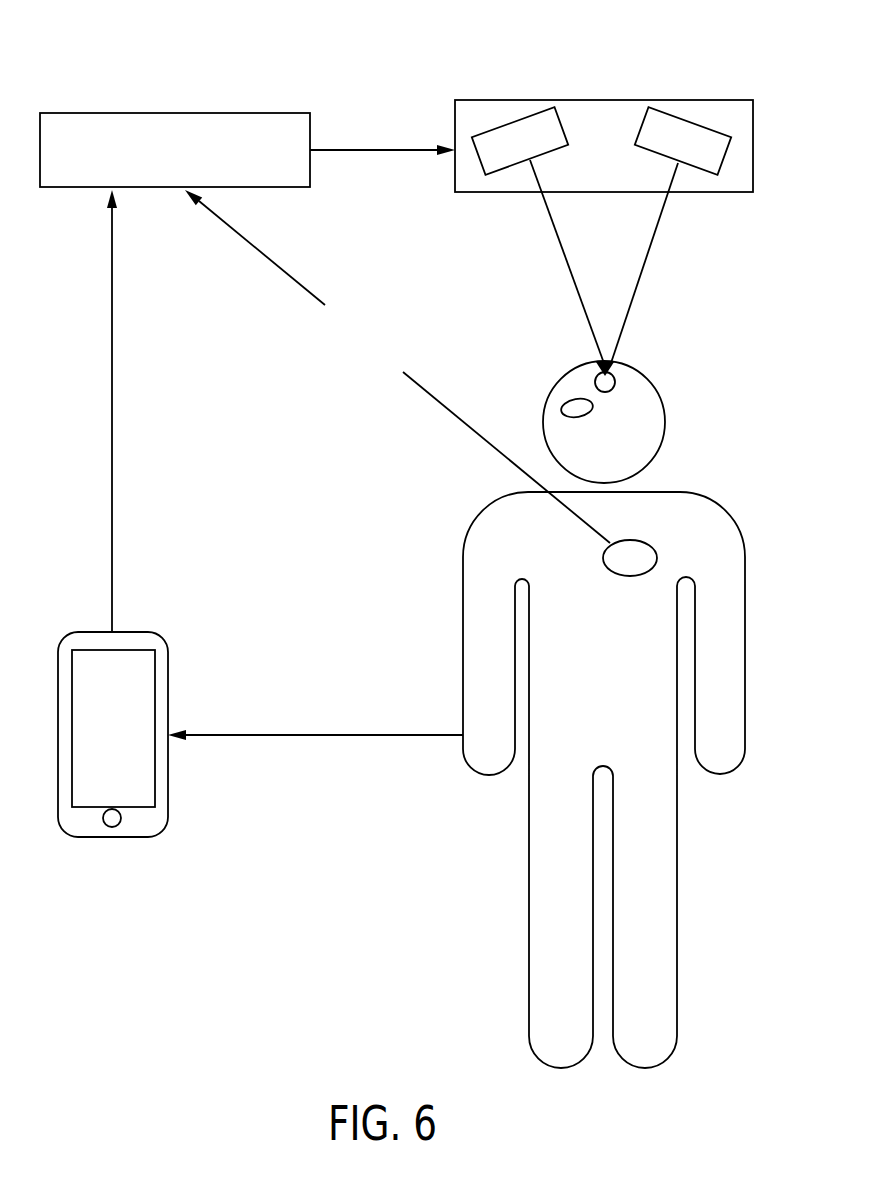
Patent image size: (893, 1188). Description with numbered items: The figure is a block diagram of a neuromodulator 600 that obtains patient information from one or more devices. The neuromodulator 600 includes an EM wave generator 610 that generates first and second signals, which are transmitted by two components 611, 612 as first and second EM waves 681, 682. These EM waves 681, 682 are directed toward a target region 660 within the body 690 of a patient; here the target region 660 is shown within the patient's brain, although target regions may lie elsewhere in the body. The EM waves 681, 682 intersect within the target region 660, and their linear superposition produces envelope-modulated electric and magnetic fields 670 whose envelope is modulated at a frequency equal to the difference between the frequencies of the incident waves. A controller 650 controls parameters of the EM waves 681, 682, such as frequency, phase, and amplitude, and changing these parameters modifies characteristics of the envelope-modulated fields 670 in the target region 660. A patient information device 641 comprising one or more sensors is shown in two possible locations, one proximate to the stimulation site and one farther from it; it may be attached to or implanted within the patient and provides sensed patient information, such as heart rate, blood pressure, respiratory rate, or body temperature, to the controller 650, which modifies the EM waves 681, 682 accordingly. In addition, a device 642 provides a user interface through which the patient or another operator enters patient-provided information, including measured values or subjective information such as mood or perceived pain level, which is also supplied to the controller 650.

The neuromodulator 600 is at (112, 92).
The controller 650 is at (260, 112).
The EM wave generator 610 is at (455, 179).
The component 611 is at (537, 110).
The component 612 is at (665, 110).
The first EM wave 681 is at (548, 220).
The second EM wave 682 is at (652, 250).
The target region 660 is at (607, 392).
The envelope-modulated electric and magnetic fields 670 is at (612, 378).
The patient information device 641 is at (562, 407).
The device 642 is at (150, 632).
The body 690 is at (707, 502).